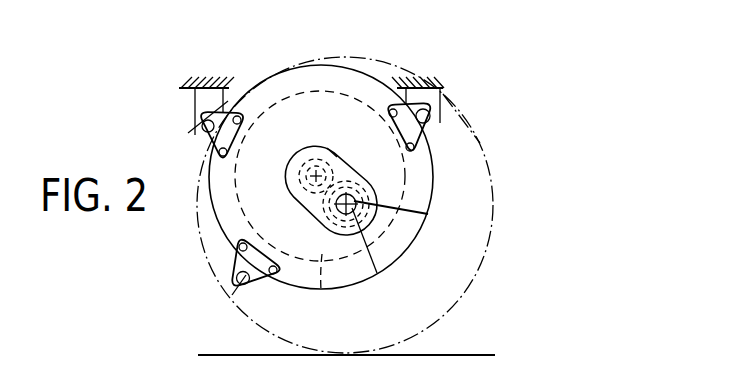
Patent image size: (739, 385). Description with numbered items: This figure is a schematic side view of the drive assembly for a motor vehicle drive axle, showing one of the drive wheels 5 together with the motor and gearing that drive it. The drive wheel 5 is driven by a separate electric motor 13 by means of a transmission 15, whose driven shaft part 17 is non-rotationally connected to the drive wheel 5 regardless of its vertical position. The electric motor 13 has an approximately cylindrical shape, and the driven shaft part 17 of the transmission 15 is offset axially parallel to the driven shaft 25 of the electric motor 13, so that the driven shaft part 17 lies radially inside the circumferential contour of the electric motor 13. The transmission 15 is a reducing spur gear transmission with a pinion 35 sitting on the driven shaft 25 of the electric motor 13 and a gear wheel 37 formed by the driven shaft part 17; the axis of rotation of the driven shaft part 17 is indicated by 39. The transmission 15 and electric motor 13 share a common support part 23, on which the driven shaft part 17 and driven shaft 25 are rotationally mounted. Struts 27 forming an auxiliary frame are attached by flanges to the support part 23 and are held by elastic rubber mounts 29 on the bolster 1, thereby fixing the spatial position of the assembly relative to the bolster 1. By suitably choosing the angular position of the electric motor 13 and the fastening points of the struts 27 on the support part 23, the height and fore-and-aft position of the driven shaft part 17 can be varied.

The bolster 1 is at (194, 88).
The drive wheel 5 is at (492, 236).
The electric motor 13 is at (321, 290).
The transmission 15 is at (305, 210).
The driven shaft part 17 is at (424, 216).
The support part 23 is at (405, 233).
The driven shaft 25 is at (300, 152).
The strut 27 is at (190, 133).
The elastic rubber mount 29 is at (194, 92).
The pinion 35 is at (323, 147).
The gear wheel 37 is at (363, 153).
The axis of rotation of the driven shaft part 39 is at (371, 266).